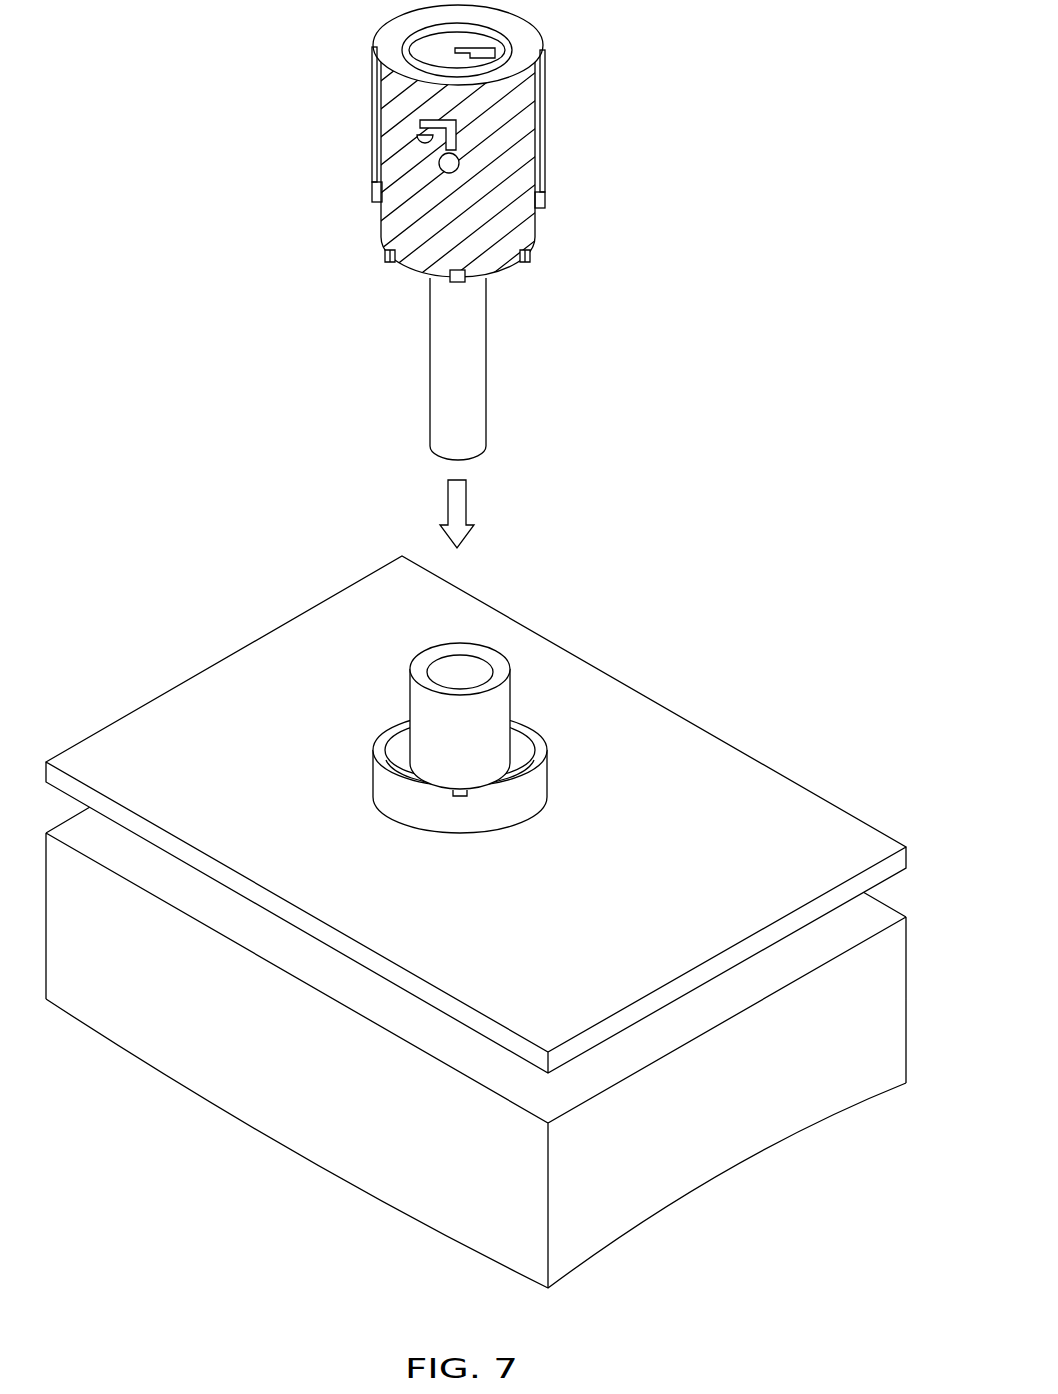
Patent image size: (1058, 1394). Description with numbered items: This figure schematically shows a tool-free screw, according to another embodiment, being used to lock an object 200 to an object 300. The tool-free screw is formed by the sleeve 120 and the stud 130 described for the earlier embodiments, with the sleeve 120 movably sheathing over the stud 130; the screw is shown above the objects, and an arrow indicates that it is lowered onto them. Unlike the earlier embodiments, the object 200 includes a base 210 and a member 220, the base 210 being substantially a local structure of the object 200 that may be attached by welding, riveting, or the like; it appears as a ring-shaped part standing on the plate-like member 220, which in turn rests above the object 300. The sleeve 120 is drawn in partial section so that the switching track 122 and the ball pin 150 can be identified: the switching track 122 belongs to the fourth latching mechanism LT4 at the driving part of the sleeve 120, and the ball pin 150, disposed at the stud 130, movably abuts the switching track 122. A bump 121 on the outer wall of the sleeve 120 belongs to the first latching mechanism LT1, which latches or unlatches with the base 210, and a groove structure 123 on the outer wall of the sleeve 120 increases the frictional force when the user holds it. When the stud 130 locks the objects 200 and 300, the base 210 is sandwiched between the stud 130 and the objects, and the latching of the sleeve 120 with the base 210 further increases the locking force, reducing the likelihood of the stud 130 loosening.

The sleeve 120 is at (535, 232).
The bump 121 is at (530, 258).
The switching track 122 is at (428, 122).
The groove structure 123 is at (545, 100).
The stud 130 is at (475, 356).
The ball pin 150 is at (446, 170).
The object 200 is at (103, 12).
The base 210 is at (571, 782).
The member 220 is at (252, 665).
The object 300 is at (140, 1010).
The first latching mechanism LT1 is at (565, 334).
The fourth latching mechanism LT4 is at (290, 88).